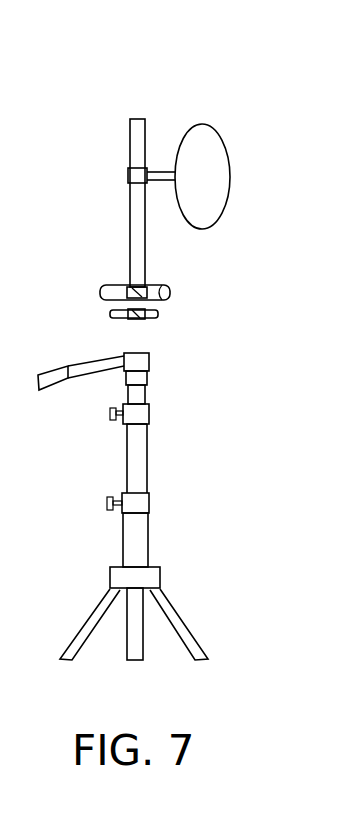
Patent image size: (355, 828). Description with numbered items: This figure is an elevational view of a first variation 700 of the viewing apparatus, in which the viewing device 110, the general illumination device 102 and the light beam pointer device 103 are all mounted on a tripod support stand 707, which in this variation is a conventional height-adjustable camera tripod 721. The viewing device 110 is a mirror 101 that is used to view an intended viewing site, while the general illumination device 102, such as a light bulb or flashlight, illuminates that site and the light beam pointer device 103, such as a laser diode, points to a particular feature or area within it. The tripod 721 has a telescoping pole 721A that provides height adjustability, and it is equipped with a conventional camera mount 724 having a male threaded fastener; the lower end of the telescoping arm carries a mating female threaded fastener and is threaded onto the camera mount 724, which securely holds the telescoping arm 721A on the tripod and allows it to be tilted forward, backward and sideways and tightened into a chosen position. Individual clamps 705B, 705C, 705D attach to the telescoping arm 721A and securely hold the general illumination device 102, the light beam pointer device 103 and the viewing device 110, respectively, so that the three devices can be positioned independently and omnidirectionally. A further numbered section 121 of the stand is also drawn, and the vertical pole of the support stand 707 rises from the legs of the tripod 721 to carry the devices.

The first variation of the viewing apparatus 700 is at (127, 99).
The mirror 101 is at (210, 147).
The viewing device 110 is at (205, 195).
The clamp 705D is at (128, 175).
The clamp 705B is at (133, 285).
The general illumination device 102 is at (158, 290).
The clamp 705C is at (128, 318).
The light beam pointer device 103 is at (157, 316).
The telescoping pole 721A is at (135, 334).
The camera mount 724 is at (147, 365).
The support pole section 121 is at (133, 440).
The tripod support stand 707 is at (138, 472).
The camera tripod 721 is at (173, 620).